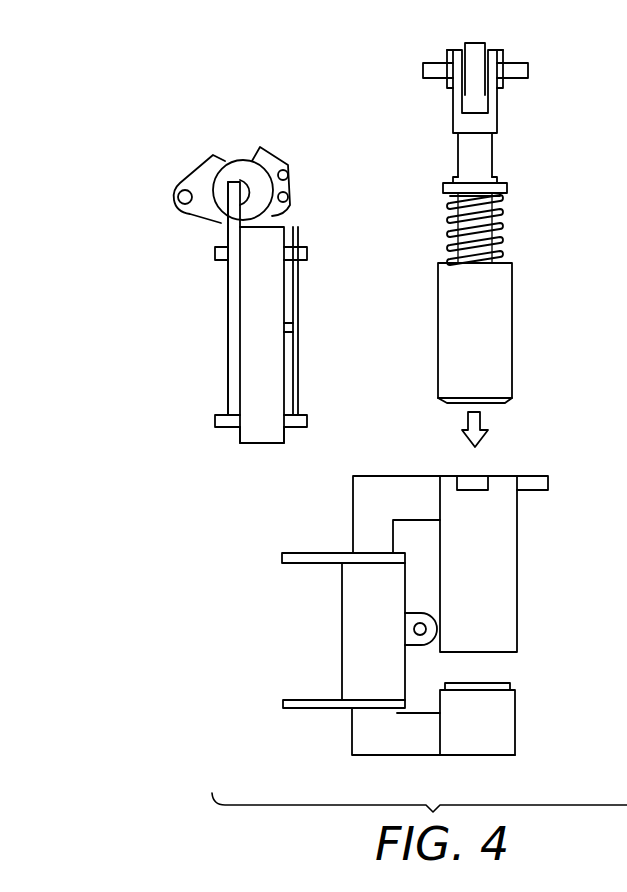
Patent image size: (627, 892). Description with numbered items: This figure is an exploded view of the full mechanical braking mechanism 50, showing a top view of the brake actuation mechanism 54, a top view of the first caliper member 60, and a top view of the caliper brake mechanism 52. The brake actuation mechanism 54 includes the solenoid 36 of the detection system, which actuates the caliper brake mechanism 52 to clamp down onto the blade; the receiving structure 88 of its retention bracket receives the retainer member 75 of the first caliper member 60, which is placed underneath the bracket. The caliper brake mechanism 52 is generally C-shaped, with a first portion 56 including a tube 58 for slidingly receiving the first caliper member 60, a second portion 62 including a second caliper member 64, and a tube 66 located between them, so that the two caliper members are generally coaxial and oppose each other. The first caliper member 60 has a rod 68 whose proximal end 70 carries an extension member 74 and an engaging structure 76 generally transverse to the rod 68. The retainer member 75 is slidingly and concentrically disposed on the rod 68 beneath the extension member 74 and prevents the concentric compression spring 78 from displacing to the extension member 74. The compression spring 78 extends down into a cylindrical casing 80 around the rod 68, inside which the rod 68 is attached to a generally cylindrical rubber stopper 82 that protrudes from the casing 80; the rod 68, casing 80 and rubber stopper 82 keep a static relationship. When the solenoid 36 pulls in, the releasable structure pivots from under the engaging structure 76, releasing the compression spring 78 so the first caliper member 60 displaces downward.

The solenoid 36 is at (235, 165).
The braking mechanism 50 is at (125, 123).
The caliper brake mechanism 52 is at (586, 448).
The brake actuation mechanism 54 is at (149, 298).
The first portion 56 is at (398, 490).
The tube 58 is at (518, 534).
The first caliper member 60 is at (485, 157).
The second portion 62 is at (400, 760).
The second caliper member 64 is at (507, 704).
The tube 66 is at (348, 632).
The rod 68 is at (490, 212).
The proximal end 70 is at (490, 123).
The extension member 74 is at (463, 102).
The retainer member 75 is at (450, 188).
The engaging structure 76 is at (476, 52).
The compression spring 78 is at (500, 235).
The cylindrical casing 80 is at (512, 285).
The rubber stopper 82 is at (505, 400).
The receiving structure 88 is at (260, 447).